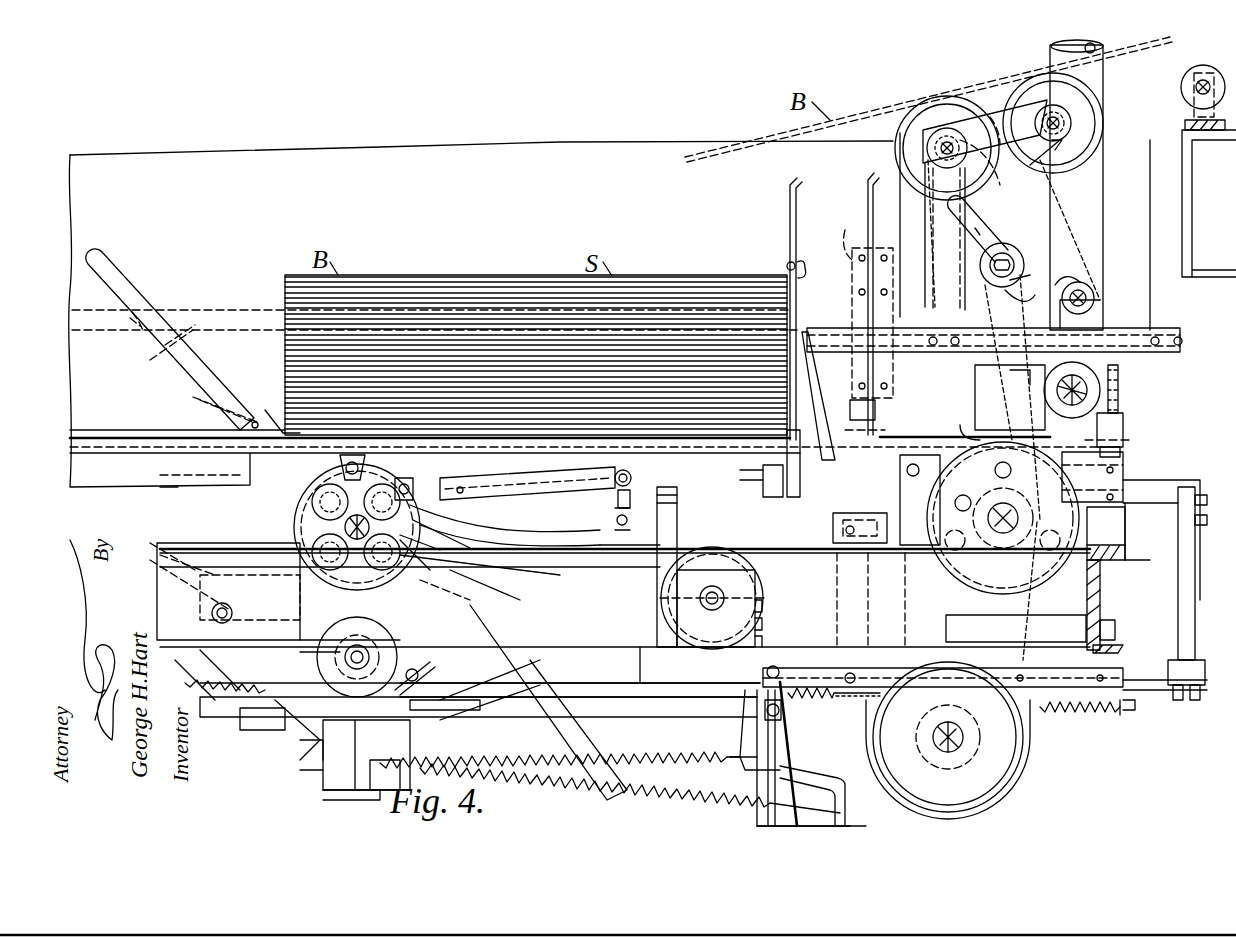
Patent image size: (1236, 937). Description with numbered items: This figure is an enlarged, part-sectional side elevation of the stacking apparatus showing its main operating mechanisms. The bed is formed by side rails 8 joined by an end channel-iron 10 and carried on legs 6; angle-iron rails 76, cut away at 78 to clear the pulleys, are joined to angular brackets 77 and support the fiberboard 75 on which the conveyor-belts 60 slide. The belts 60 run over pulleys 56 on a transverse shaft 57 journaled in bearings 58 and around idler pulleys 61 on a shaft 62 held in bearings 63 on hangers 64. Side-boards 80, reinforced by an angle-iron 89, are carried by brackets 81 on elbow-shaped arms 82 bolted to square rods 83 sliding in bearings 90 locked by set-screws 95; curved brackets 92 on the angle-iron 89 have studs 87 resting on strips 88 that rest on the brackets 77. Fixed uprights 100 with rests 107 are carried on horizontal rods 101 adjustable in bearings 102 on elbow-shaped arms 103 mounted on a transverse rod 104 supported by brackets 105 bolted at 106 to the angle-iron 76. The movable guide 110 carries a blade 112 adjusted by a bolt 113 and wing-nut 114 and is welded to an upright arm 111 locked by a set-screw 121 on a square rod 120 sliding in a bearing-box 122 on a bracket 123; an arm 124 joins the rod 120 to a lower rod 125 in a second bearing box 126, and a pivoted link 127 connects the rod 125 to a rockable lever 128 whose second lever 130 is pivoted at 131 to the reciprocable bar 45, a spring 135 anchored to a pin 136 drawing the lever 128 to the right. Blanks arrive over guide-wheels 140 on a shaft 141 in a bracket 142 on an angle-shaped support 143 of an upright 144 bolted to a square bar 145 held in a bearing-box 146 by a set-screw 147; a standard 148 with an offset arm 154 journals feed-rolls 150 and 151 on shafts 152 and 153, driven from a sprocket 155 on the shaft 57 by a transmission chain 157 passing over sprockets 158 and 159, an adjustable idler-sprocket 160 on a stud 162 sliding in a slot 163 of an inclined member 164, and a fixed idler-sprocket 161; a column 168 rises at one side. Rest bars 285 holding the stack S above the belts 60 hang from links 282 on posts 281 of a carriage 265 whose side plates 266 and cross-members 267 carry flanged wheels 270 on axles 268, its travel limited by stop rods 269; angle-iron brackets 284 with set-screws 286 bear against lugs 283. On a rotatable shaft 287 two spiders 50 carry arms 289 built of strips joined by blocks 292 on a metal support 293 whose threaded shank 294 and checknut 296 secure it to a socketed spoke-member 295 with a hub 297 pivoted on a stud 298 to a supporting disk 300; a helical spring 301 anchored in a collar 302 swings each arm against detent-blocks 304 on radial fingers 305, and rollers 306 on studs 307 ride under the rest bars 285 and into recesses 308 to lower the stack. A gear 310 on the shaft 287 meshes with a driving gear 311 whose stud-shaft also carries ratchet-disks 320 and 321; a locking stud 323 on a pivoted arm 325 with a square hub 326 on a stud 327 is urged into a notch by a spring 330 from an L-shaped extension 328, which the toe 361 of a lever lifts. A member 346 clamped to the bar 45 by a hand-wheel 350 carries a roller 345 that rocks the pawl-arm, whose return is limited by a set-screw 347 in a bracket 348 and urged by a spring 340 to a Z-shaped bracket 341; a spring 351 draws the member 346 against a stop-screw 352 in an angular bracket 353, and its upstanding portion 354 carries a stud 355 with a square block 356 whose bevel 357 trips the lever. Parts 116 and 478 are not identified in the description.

The table top 80 is at (511, 132).
The frame rail 75 is at (128, 428).
The center line 89 is at (258, 311).
The stack S is at (536, 355).
The arm 50 is at (222, 360).
The arm extension 308 is at (283, 423).
The link 289 is at (140, 330).
The link 292 is at (168, 358).
The link 293 is at (215, 405).
The cover 60 is at (195, 428).
The guide 285 is at (245, 462).
The frame 76 is at (178, 482).
The frame base 8 is at (775, 555).
The housing 327 is at (157, 575).
The link 325 is at (172, 532).
The link 326 is at (152, 543).
The spring 330 is at (200, 660).
The block 328 is at (250, 716).
The lever 361 is at (300, 722).
The bracket 357 is at (323, 745).
The bracket 356 is at (323, 760).
The bracket 355 is at (323, 780).
The bracket 354 is at (340, 793).
The sprocket 287 is at (300, 530).
The gear 294 is at (290, 470).
The gear 296 is at (300, 500).
The gear 300 is at (300, 522).
The gear 310 is at (310, 545).
The shaft 305 is at (300, 512).
The bolt 304 is at (310, 490).
The bracket 302 is at (360, 466).
The bar 301 is at (478, 483).
The pivot 283 is at (618, 490).
The bolt 284 is at (618, 500).
The nut 286 is at (622, 526).
The link 297 is at (418, 530).
The link 306 is at (462, 540).
The link 307 is at (560, 543).
The link 298 is at (432, 570).
The link 295 is at (470, 545).
The link 323 is at (500, 595).
The link 311 is at (468, 607).
The bar 353 is at (520, 650).
The gear 320 is at (350, 628).
The plate 321 is at (340, 642).
The bolt 347 is at (420, 676).
The bar 345 is at (410, 715).
The block 350 is at (400, 770).
The spring 346 is at (400, 775).
The spring 340 is at (648, 752).
The spring end 341 is at (720, 740).
The spring 351 is at (650, 792).
The link 348 is at (500, 685).
The link 352 is at (520, 700).
The rail 265 is at (580, 690).
The post 266 is at (635, 650).
The rail 45 is at (660, 698).
The disc 270 is at (755, 580).
The housing 268 is at (662, 587).
The ratchet 267 is at (765, 606).
The post 281 is at (678, 534).
The post 282 is at (678, 512).
The block 121 is at (768, 468).
The post 116 is at (780, 500).
The block 83 is at (840, 530).
The pin 90 is at (846, 534).
The bar 127 is at (806, 668).
The rack 125 is at (1148, 702).
The bar 128 is at (750, 688).
The post 131 is at (783, 728).
The post 130 is at (782, 752).
The lever 6 is at (840, 782).
The spring 64 is at (862, 703).
The wheel 61 is at (880, 753).
The hub 62 is at (940, 752).
The hub ring 63 is at (976, 740).
The spring 135 is at (1080, 715).
The spring anchor 136 is at (1122, 716).
The block 123 is at (1030, 615).
The chain 58 is at (1030, 610).
The chain 57 is at (975, 575).
The gear 56 is at (985, 590).
The hub 155 is at (1000, 560).
The gear 95 is at (950, 555).
The bolt 82 is at (908, 500).
The rail 146 is at (1110, 352).
The bracket 145 is at (1135, 335).
The hub 104 is at (1102, 385).
The block 92 is at (1125, 420).
The rack 105 is at (1120, 405).
The block 87 is at (1120, 448).
The line 88 is at (1150, 440).
The block 122 is at (1125, 472).
The bar 120 is at (1170, 480).
The frame 77 is at (1130, 528).
The housing 106 is at (1088, 530).
The post 124 is at (1178, 558).
The frame 10 is at (1125, 565).
The block 269 is at (1103, 600).
The bolt 478 is at (1135, 620).
The foot 126 is at (1100, 664).
The post 168 is at (1103, 190).
The frame 144 is at (1150, 250).
The bracket 143 is at (1192, 222).
The bracket 140 is at (1196, 87).
The bolt 141 is at (1196, 95).
The base 142 is at (1186, 124).
The pulley 151 is at (942, 104).
The pulley 150 is at (1042, 80).
The sprocket 152 is at (1065, 130).
The sprocket 159 is at (965, 160).
The arm 154 is at (988, 120).
The arc 153 is at (975, 192).
The link 158 is at (1045, 160).
The housing 148 is at (925, 255).
The slot link 163 is at (985, 215).
The link 164 is at (998, 232).
The sprocket 162 is at (1010, 258).
The link 160 is at (1025, 267).
The link 161 is at (1088, 275).
The sprocket 147 is at (1096, 300).
The rod 112 is at (788, 202).
The rod 100 is at (866, 216).
The link 81 is at (850, 235).
The hook 114 is at (802, 260).
The pin 113 is at (786, 266).
The guide 110 is at (795, 318).
The bar 111 is at (815, 378).
The block 107 is at (850, 420).
The plate 101 is at (895, 350).
The block 102 is at (990, 365).
The block 103 is at (1010, 385).
The link 157 is at (968, 420).
The rail 78 is at (950, 437).